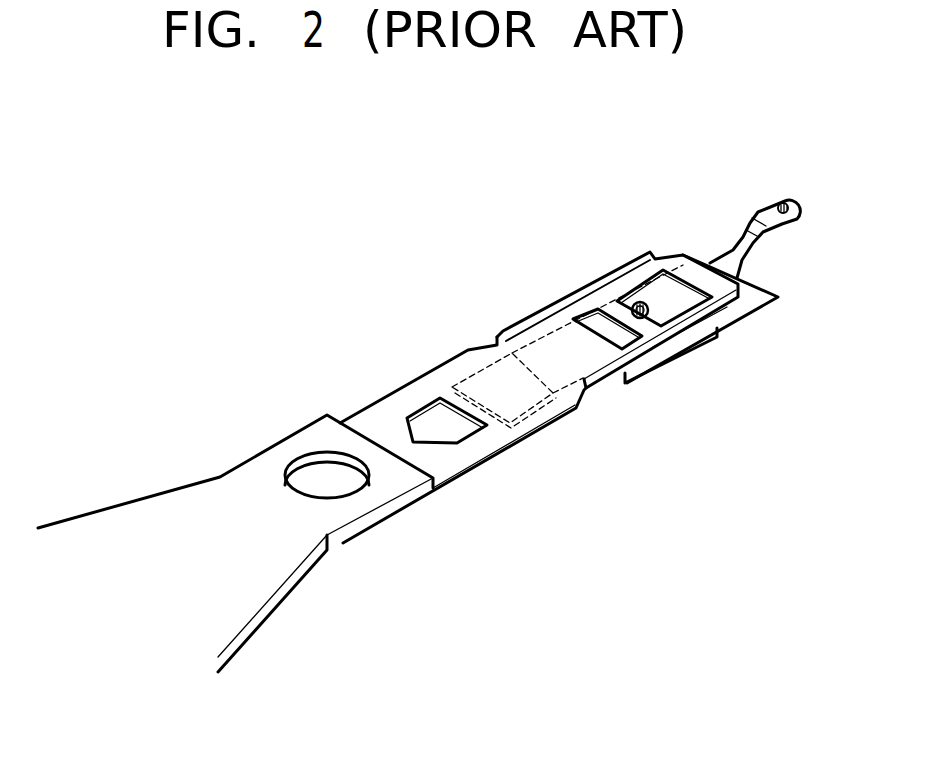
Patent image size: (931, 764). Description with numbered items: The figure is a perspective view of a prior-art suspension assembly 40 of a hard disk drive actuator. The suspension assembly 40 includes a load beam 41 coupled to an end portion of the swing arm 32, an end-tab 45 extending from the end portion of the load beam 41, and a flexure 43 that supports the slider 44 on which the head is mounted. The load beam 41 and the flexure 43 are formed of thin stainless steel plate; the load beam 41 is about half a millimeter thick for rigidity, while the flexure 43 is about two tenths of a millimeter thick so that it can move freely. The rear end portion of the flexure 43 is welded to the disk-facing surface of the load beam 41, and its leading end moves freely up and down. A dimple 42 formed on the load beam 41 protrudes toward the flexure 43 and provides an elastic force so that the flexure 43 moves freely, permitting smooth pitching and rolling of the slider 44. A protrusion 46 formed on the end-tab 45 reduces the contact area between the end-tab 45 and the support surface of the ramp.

The swing arm 32 is at (152, 507).
The suspension assembly 40 is at (462, 253).
The load beam 41 is at (472, 360).
The dimple 42 is at (638, 303).
The flexure 43 is at (760, 293).
The slider 44 is at (672, 357).
The end-tab 45 is at (760, 212).
The protrusion 46 is at (786, 202).